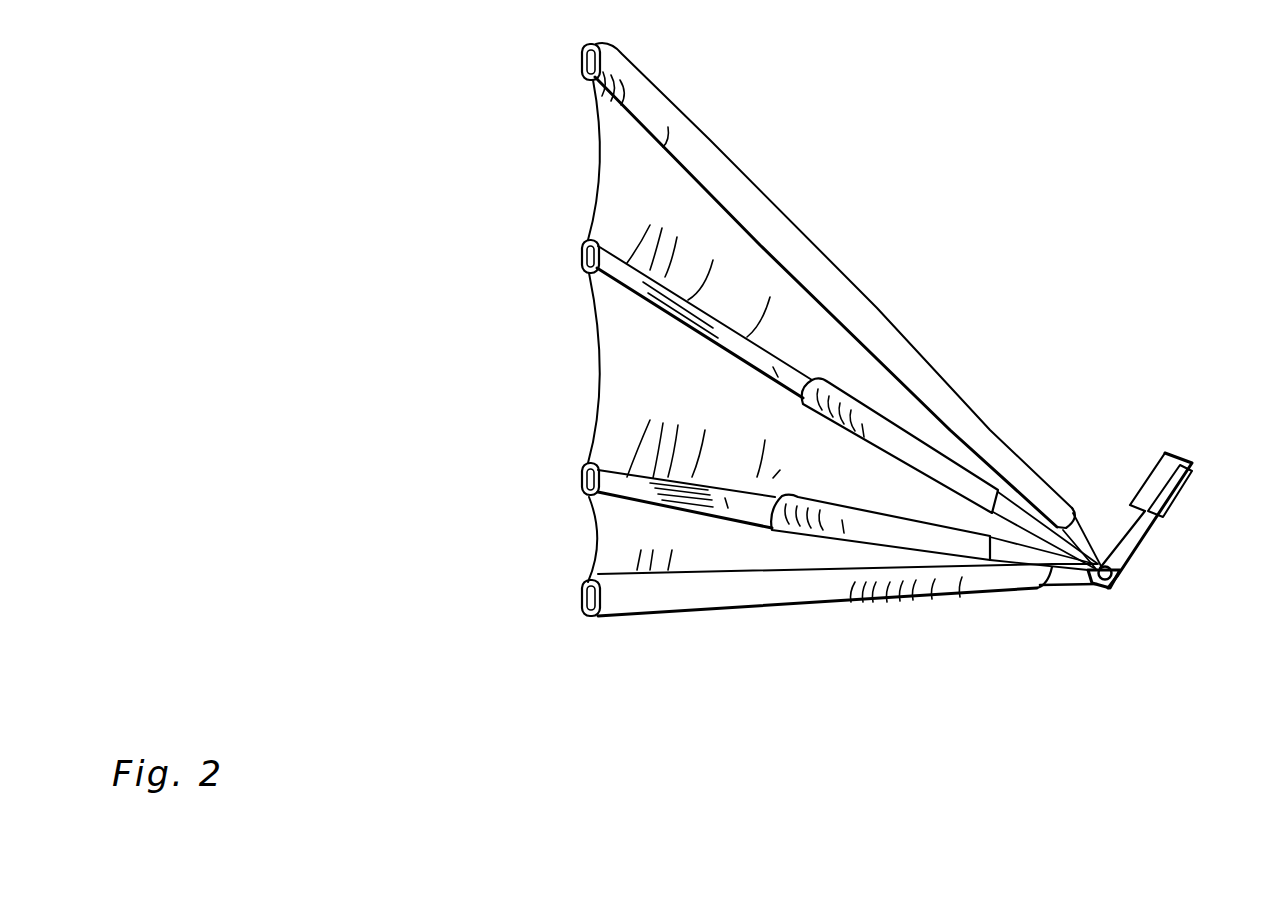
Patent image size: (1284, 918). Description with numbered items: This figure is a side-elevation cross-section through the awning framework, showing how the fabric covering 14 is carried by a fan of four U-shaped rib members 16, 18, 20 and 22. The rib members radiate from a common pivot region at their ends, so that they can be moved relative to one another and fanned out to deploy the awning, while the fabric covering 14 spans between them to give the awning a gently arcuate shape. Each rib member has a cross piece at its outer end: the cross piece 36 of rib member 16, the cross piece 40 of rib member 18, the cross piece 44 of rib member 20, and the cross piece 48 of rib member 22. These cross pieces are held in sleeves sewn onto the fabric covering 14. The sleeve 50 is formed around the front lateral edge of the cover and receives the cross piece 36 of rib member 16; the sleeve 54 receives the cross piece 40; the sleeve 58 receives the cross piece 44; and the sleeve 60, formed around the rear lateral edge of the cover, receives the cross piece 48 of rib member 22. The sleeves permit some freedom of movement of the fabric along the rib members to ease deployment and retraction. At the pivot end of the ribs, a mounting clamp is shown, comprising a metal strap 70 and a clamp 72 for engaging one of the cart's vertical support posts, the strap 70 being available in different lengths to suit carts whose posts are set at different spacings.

The fabric covering 14 is at (645, 393).
The rib member 16 is at (800, 243).
The rib member 18 is at (767, 358).
The rib member 20 is at (762, 490).
The rib member 22 is at (735, 595).
The cross piece 36 is at (588, 62).
The cross piece 40 is at (586, 268).
The cross piece 44 is at (586, 486).
The cross piece 48 is at (586, 590).
The sleeve 50 is at (586, 44).
The sleeve 54 is at (586, 243).
The sleeve 58 is at (586, 468).
The sleeve 60 is at (586, 614).
The metal strap 70 is at (1128, 544).
The clamp 72 is at (1180, 472).